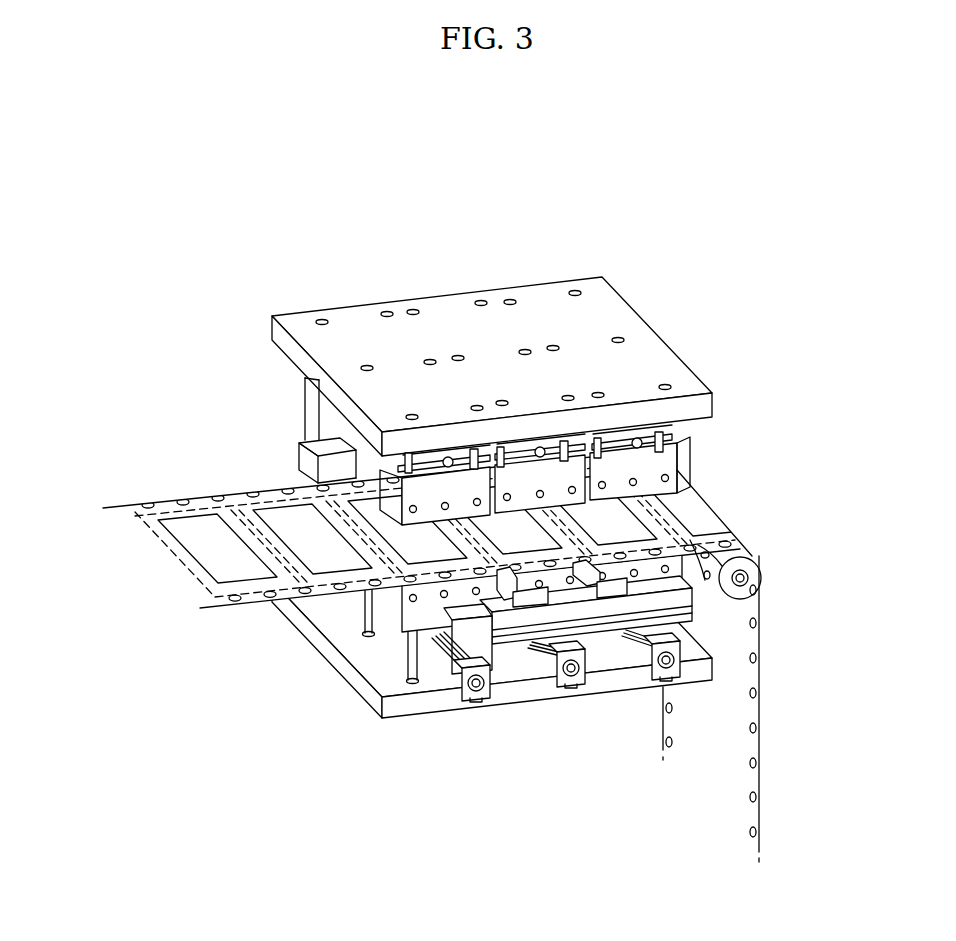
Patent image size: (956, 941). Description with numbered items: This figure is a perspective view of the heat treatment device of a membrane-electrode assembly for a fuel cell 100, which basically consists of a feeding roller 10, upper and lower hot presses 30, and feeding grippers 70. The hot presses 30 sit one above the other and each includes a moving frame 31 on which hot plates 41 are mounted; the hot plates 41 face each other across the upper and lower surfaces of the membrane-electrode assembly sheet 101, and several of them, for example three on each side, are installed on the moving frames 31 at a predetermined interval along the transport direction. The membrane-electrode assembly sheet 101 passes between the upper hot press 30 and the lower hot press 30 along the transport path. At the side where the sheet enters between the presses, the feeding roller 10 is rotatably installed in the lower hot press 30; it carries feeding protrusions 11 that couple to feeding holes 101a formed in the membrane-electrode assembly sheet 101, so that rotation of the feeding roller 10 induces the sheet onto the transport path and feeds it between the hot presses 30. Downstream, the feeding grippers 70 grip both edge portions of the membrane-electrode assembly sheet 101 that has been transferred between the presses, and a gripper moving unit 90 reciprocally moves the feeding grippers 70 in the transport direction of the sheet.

The heat treatment device of a membrane-electrode assembly for a fuel cell 100 is at (461, 192).
The hot press 30 is at (652, 308).
The moving frame 31 is at (305, 327).
The hot plate 41 is at (668, 458).
The membrane-electrode assembly sheet 101 is at (233, 490).
The feeding hole 101a is at (698, 563).
The feeding protrusion 11 is at (721, 542).
The feeding roller 10 is at (755, 552).
The feeding gripper 70 is at (492, 582).
The gripper moving unit 90 is at (612, 655).